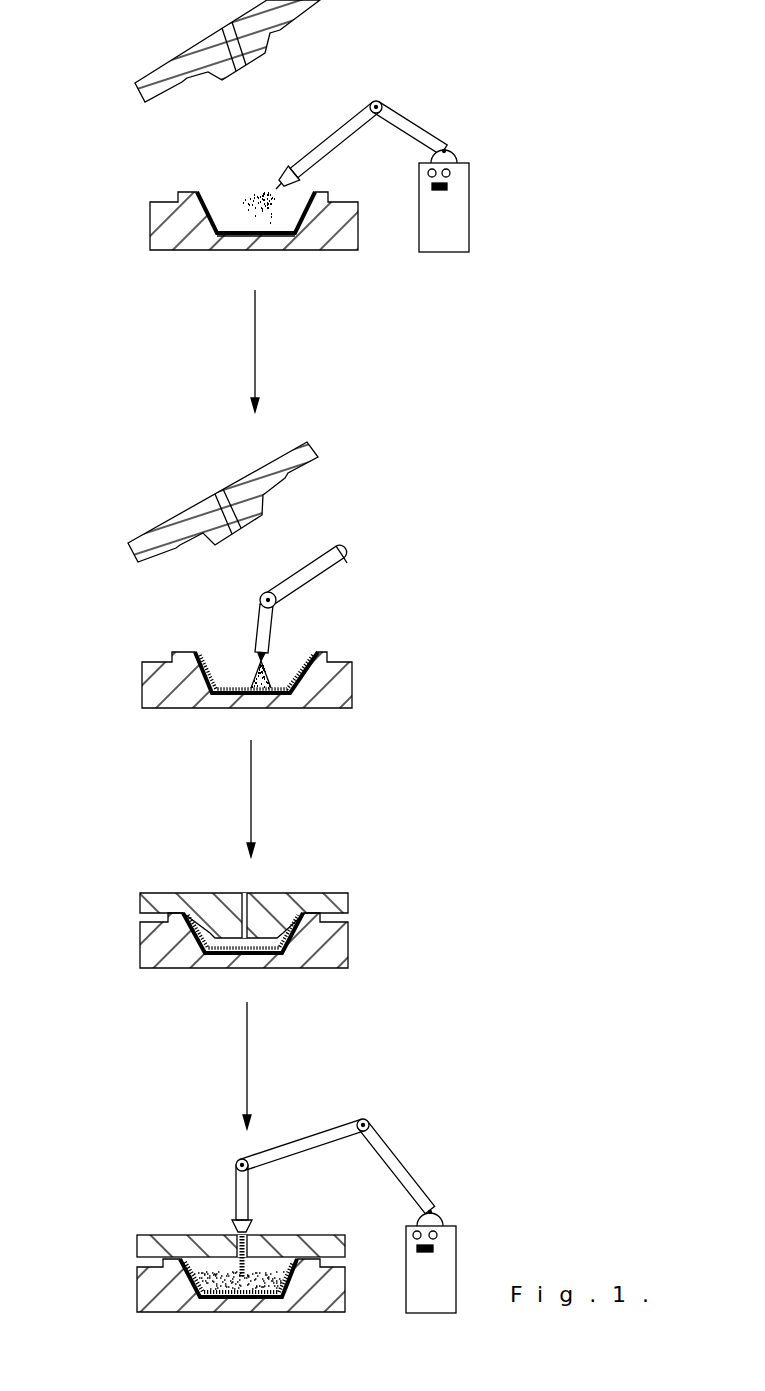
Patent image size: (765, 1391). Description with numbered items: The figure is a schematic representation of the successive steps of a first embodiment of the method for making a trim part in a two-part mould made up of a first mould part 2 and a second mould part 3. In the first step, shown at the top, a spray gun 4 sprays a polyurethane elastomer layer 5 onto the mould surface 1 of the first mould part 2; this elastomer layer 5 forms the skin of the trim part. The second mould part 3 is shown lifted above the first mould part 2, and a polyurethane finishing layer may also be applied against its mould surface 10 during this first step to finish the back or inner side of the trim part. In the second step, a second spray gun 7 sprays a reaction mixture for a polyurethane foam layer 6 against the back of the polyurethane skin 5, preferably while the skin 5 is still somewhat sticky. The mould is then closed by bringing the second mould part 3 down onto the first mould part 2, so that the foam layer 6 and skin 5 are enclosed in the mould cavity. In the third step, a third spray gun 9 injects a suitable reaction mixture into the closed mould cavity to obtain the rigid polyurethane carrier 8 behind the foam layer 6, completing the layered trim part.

The mould surface 1 is at (227, 237).
The first mould part 2 is at (165, 232).
The second mould part 3 is at (173, 63).
The spray gun 4 is at (470, 167).
The polyurethane elastomer layer 5 is at (207, 205).
The polyurethane foam layer 6 is at (213, 663).
The second spray gun 7 is at (304, 568).
The rigid polyurethane carrier 8 is at (253, 1277).
The third spray gun 9 is at (468, 1238).
The mould surface of the second mould part 10 is at (270, 30).